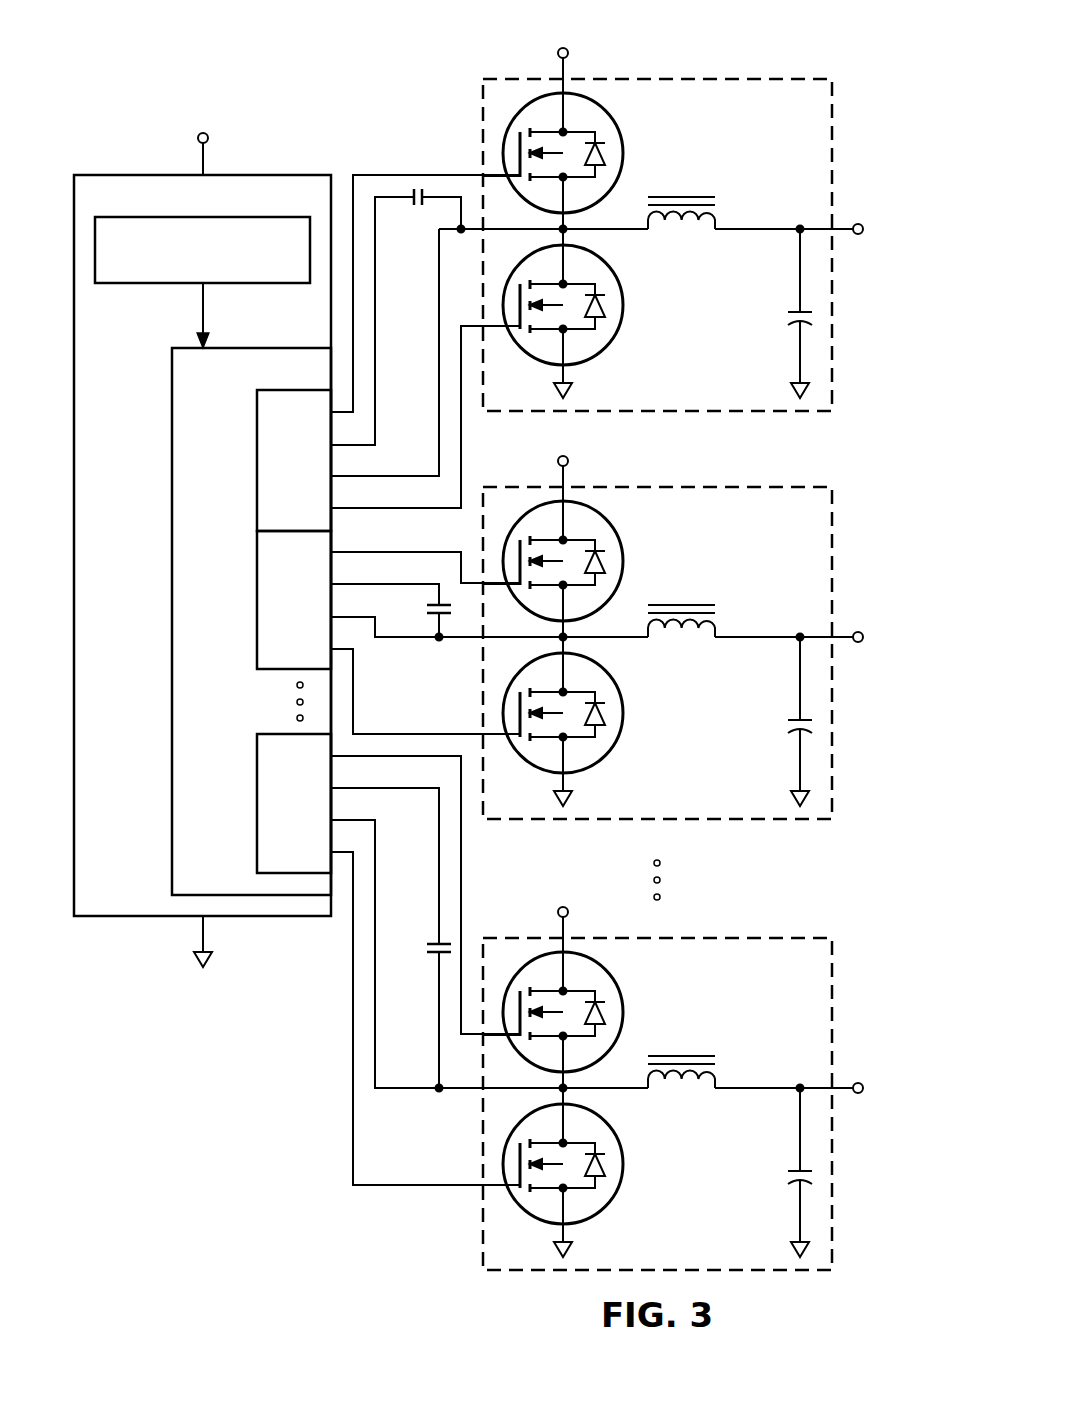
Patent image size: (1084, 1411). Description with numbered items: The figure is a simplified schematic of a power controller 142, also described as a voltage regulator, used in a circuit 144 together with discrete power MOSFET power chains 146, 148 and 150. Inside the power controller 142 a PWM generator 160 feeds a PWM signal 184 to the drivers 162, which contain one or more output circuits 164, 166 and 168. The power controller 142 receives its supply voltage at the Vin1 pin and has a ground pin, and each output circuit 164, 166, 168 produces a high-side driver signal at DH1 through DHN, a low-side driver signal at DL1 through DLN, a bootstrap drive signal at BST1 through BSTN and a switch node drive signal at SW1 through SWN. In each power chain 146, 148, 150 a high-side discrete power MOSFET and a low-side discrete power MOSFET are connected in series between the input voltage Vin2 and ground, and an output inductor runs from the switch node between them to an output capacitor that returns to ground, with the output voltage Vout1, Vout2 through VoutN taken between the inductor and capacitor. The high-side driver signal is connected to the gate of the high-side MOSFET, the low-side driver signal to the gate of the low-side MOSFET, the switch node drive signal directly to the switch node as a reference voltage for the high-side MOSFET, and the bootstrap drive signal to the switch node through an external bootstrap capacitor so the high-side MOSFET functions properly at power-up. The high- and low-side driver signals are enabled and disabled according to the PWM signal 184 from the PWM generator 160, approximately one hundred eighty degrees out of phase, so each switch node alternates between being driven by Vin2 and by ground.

The power controller 142 is at (154, 168).
The circuit 144 is at (284, 54).
The discrete power MOSFET power chain 146 is at (846, 176).
The discrete power MOSFET power chain 148 is at (699, 653).
The discrete power MOSFET power chain 150 is at (698, 1104).
The PWM generator 160 is at (233, 284).
The drivers 162 is at (160, 624).
The output circuit 164 is at (257, 462).
The output circuit 166 is at (257, 600).
The output circuit 168 is at (257, 805).
The PWM signal 184 is at (200, 320).